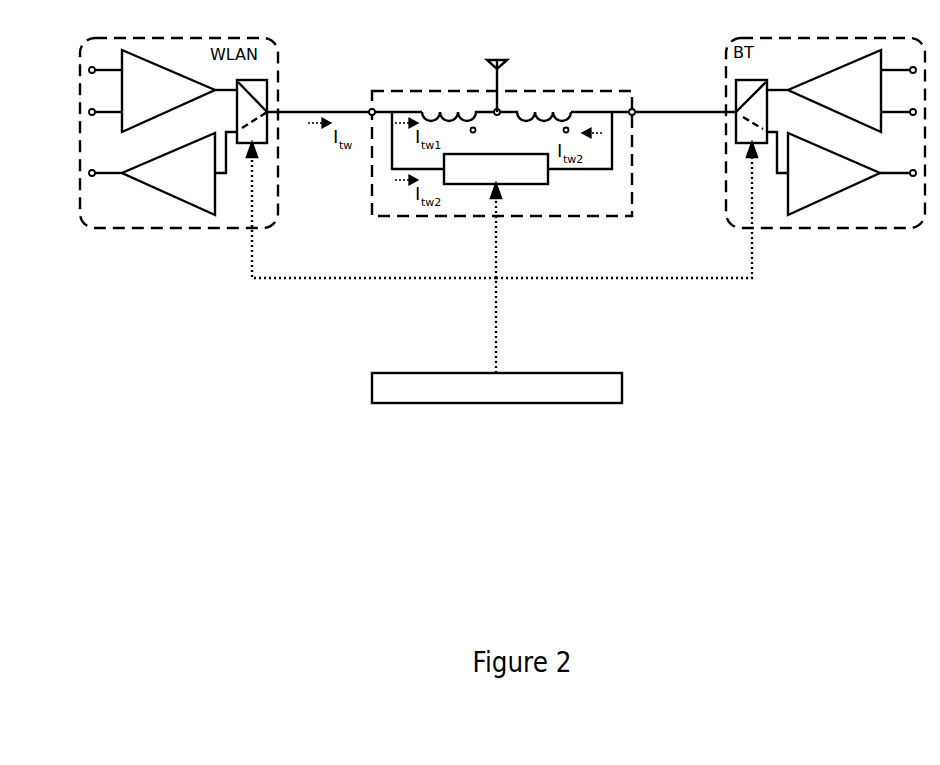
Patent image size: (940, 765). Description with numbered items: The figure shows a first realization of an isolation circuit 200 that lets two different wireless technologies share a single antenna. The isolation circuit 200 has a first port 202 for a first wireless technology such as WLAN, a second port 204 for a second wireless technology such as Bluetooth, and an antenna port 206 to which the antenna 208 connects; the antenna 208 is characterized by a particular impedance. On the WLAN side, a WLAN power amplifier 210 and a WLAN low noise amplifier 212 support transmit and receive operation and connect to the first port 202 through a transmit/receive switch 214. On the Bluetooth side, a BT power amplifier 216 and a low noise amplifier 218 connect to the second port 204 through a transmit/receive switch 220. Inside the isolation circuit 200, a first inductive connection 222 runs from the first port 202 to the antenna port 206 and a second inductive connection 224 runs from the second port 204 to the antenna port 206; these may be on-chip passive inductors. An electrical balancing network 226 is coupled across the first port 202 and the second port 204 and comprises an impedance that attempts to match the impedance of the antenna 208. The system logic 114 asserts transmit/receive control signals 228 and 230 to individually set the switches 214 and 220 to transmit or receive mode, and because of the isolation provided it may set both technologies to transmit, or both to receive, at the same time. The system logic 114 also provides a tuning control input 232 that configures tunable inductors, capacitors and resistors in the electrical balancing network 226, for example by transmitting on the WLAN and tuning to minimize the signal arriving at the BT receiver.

The system logic 114 is at (582, 397).
The isolation circuit 200 is at (591, 208).
The first port 202 is at (371, 110).
The second port 204 is at (633, 110).
The antenna port 206 is at (498, 108).
The antenna 208 is at (497, 60).
The WLAN power amplifier 210 is at (148, 65).
The WLAN low noise amplifier 212 is at (195, 200).
The transmit/receive switch 214 is at (258, 88).
The BT power amplifier 216 is at (860, 67).
The BT low noise amplifier 218 is at (810, 200).
The transmit/receive switch 220 is at (743, 88).
The first inductive connection 222 is at (424, 110).
The second inductive connection 224 is at (571, 110).
The electrical balancing network 226 is at (510, 179).
The transmit/receive control signal 228 is at (330, 278).
The transmit/receive control signal 230 is at (582, 276).
The tuning control input 232 is at (496, 262).